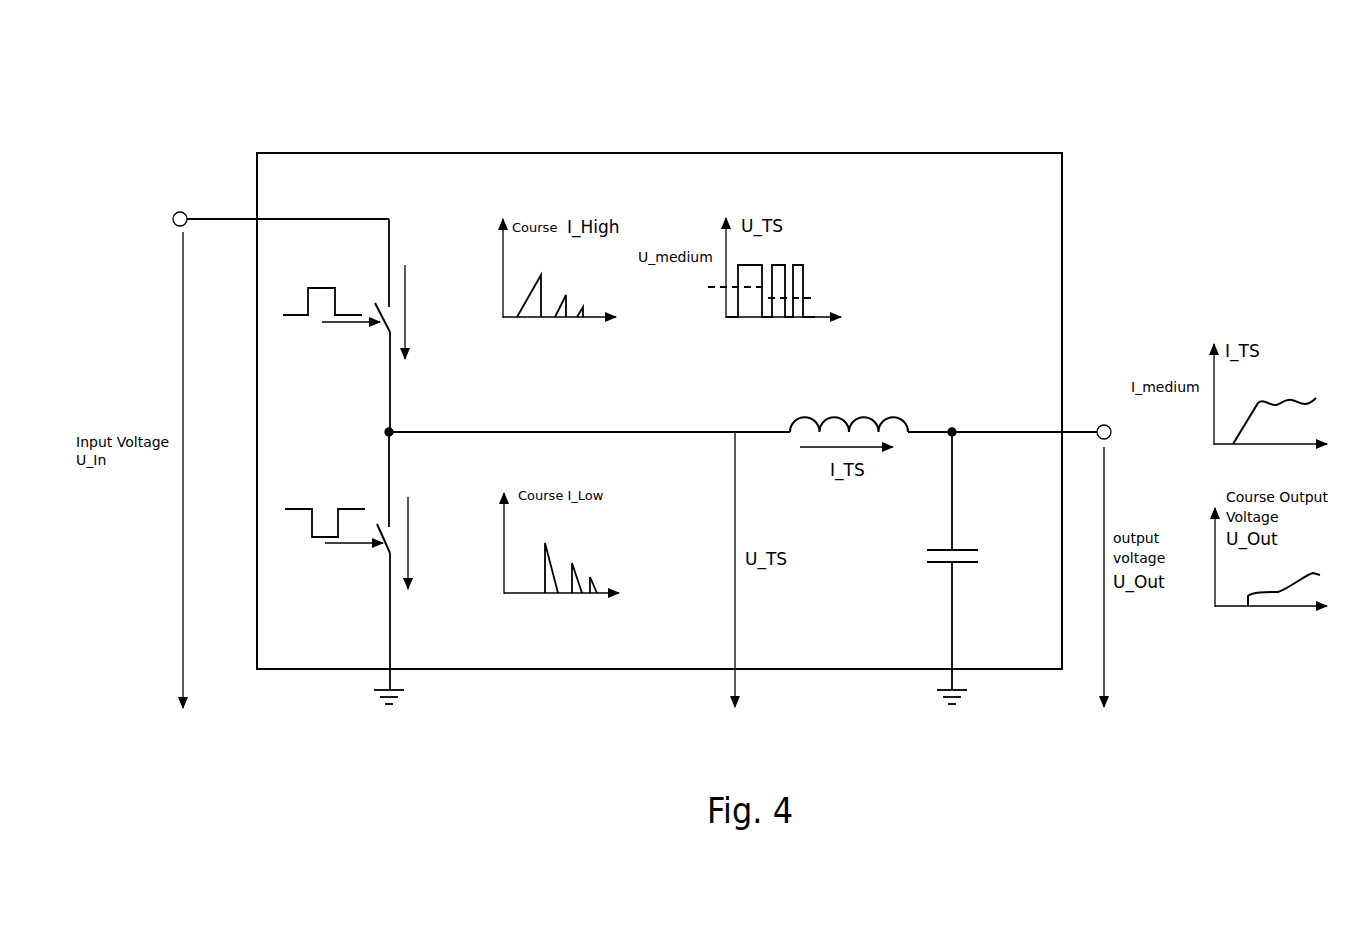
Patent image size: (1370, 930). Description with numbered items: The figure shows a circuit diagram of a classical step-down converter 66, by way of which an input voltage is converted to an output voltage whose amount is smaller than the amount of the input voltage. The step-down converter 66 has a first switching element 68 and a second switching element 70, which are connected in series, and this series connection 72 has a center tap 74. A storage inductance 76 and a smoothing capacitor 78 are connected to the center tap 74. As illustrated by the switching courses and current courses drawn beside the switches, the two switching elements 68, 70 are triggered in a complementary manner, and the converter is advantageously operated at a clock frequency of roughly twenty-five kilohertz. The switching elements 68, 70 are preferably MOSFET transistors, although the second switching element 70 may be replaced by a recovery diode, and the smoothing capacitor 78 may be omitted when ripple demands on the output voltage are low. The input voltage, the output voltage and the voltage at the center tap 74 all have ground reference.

The step-down converter 66 is at (866, 153).
The first switching element 68 is at (406, 240).
The second switching element 70 is at (338, 606).
The series connection 72 is at (286, 448).
The center tap 74 is at (392, 430).
The storage inductance 76 is at (888, 402).
The smoothing capacitor 78 is at (940, 573).